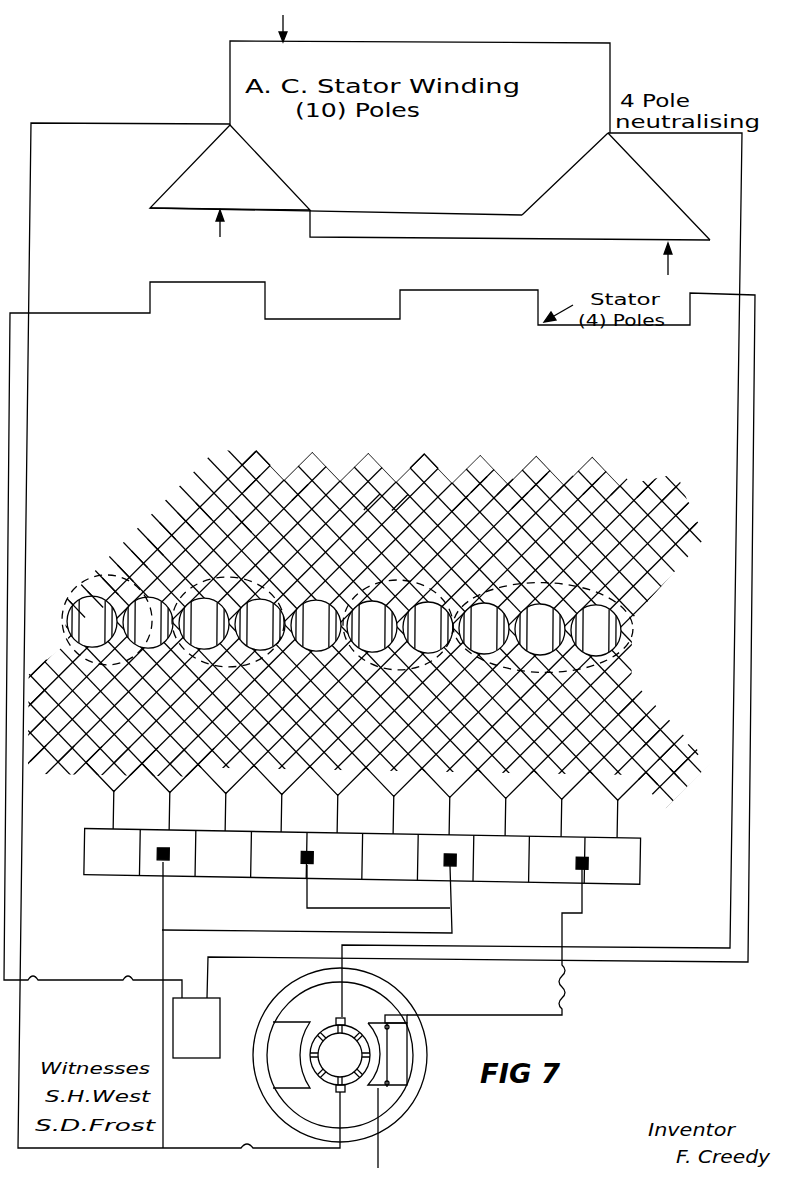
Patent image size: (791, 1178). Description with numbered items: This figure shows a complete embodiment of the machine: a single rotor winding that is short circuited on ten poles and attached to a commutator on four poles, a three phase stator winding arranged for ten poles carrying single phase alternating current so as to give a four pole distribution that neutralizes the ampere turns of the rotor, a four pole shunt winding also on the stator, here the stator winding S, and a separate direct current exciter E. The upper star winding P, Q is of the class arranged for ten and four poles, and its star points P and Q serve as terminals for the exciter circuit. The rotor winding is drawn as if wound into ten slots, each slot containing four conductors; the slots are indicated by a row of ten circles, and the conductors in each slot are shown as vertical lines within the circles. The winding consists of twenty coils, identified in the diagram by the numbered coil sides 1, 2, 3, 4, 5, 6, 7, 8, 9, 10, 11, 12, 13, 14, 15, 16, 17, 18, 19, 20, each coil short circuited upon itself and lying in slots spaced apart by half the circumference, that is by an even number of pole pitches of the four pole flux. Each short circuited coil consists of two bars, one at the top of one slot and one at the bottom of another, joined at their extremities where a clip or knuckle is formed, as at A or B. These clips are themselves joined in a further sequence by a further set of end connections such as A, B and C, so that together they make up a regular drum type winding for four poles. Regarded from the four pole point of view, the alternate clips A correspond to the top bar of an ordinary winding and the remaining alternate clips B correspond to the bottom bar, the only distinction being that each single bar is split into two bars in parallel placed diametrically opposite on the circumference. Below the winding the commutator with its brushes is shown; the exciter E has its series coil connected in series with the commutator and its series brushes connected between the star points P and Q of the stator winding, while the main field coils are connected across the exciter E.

The armature slot / coil 1 is at (272, 547).
The armature slot / coil 2 is at (294, 542).
The armature slot / coil 3 is at (318, 533).
The armature slot / coil 4 is at (338, 528).
The armature slot / coil 5 is at (358, 522).
The armature slot / coil 6 is at (381, 516).
The armature slot / coil 7 is at (400, 510).
The armature slot / coil 8 is at (421, 507).
The armature slot / coil 9 is at (436, 501).
The armature slot / coil 10 is at (469, 510).
The armature slot / coil 11 is at (35, 676).
The armature slot / coil 12 is at (340, 696).
The armature slot / coil 13 is at (346, 721).
The armature slot / coil 14 is at (356, 740).
The armature slot / coil 15 is at (378, 748).
The armature slot / coil 16 is at (400, 756).
The armature slot / coil 17 is at (419, 762).
The armature slot / coil 18 is at (407, 770).
The armature slot / coil 19 is at (434, 771).
The armature slot / coil 20 is at (462, 765).
The star point P is at (230, 162).
The star point Q is at (616, 181).
The four-pole stator winding S is at (393, 640).
The end connection C is at (340, 446).
The clip A is at (310, 492).
The clip B is at (458, 498).
The exciter E is at (196, 1028).